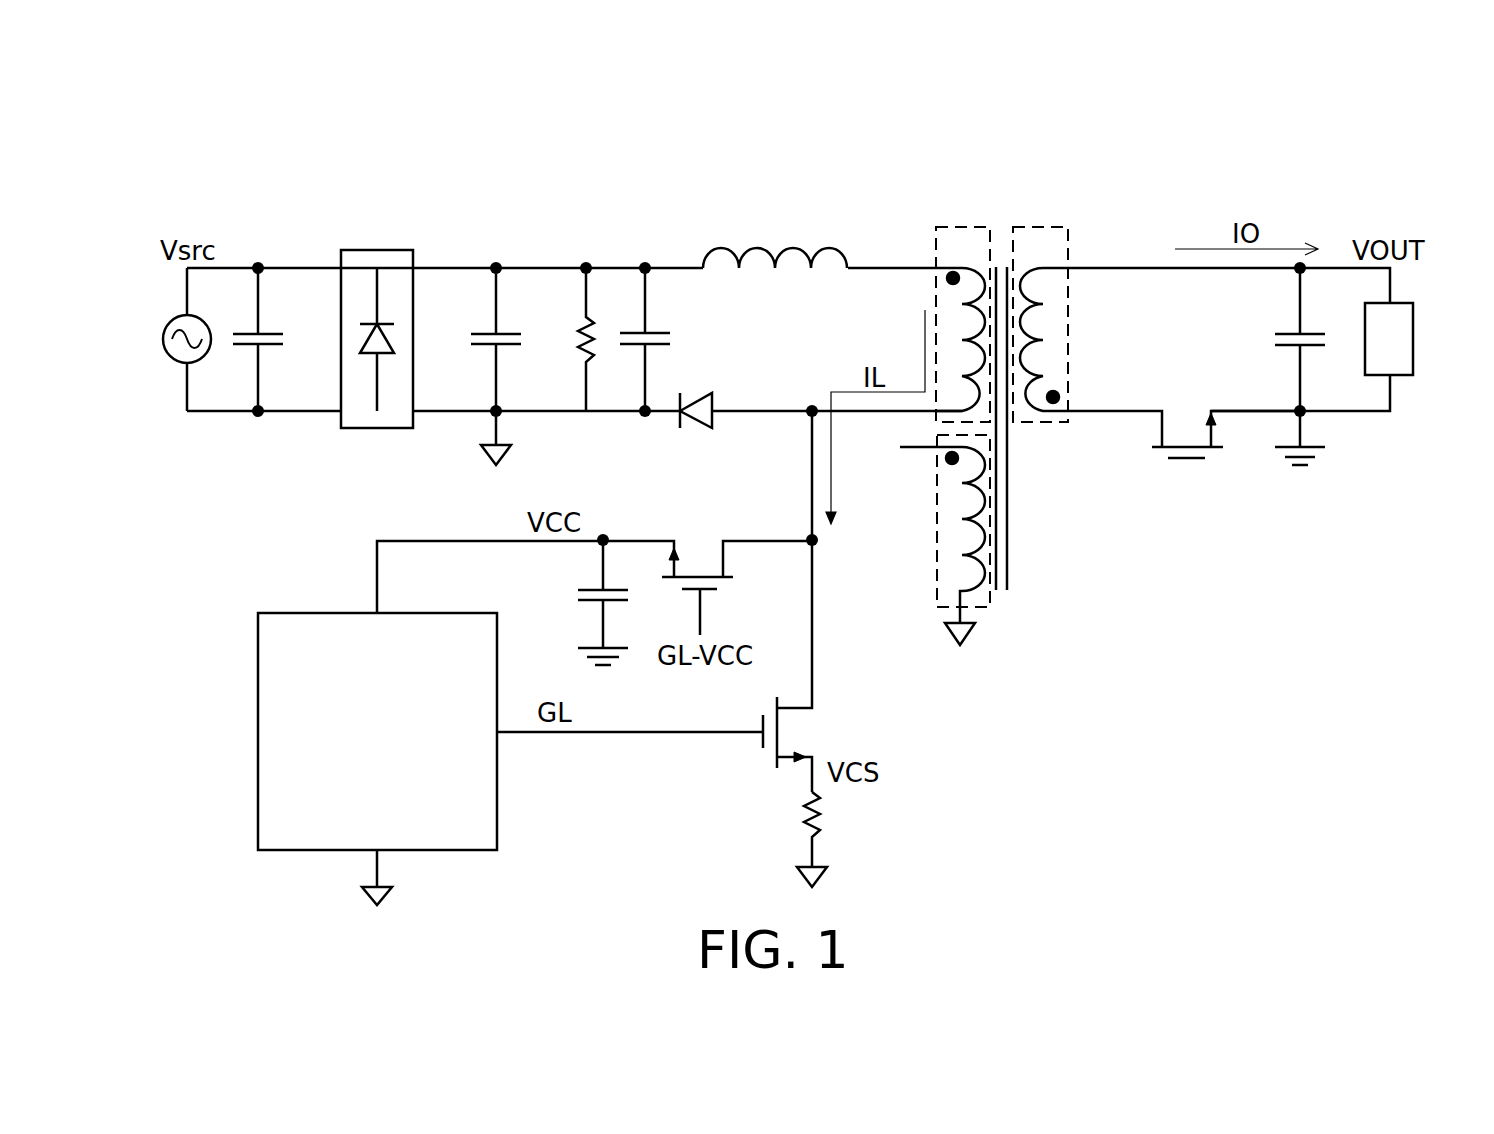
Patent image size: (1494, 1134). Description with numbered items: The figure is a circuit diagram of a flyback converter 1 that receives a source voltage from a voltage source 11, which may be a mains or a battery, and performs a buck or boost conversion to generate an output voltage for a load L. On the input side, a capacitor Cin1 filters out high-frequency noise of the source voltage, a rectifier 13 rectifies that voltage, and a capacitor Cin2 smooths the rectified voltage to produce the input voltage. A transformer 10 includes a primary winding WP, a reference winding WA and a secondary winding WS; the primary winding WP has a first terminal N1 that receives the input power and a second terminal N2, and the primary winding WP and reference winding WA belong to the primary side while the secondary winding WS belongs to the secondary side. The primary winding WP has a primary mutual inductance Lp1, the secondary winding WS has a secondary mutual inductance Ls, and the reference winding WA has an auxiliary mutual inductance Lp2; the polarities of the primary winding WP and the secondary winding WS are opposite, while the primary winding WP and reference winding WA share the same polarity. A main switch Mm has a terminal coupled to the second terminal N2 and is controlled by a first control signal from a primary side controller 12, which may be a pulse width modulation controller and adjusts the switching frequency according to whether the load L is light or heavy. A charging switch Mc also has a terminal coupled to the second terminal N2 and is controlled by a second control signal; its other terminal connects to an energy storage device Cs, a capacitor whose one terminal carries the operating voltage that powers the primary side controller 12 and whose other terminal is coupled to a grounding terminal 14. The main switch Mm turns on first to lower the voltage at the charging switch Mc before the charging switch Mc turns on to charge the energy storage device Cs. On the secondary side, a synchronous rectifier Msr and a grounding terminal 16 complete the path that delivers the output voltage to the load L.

The flyback converter 1 is at (1306, 166).
The transformer 10 is at (1002, 379).
The voltage source 11 is at (163, 342).
The primary side controller 12 is at (258, 730).
The rectifier 13 is at (375, 250).
The grounding terminal 14 is at (480, 452).
The grounding terminal 16 is at (1320, 440).
The capacitor Cin1 is at (282, 333).
The capacitor Cin2 is at (520, 332).
The energy storage device Cs is at (578, 590).
The charging switch Mc is at (735, 560).
The main switch Mm is at (760, 745).
The synchronous rectifier Msr is at (1162, 432).
The load L is at (1413, 340).
The primary mutual inductance Lp1 is at (975, 265).
The auxiliary mutual inductance Lp2 is at (973, 588).
The secondary mutual inductance Ls is at (1030, 265).
The primary winding WP is at (936, 258).
The secondary winding WS is at (1070, 246).
The reference winding WA is at (936, 545).
The first terminal N1 is at (938, 265).
The second terminal N2 is at (955, 412).